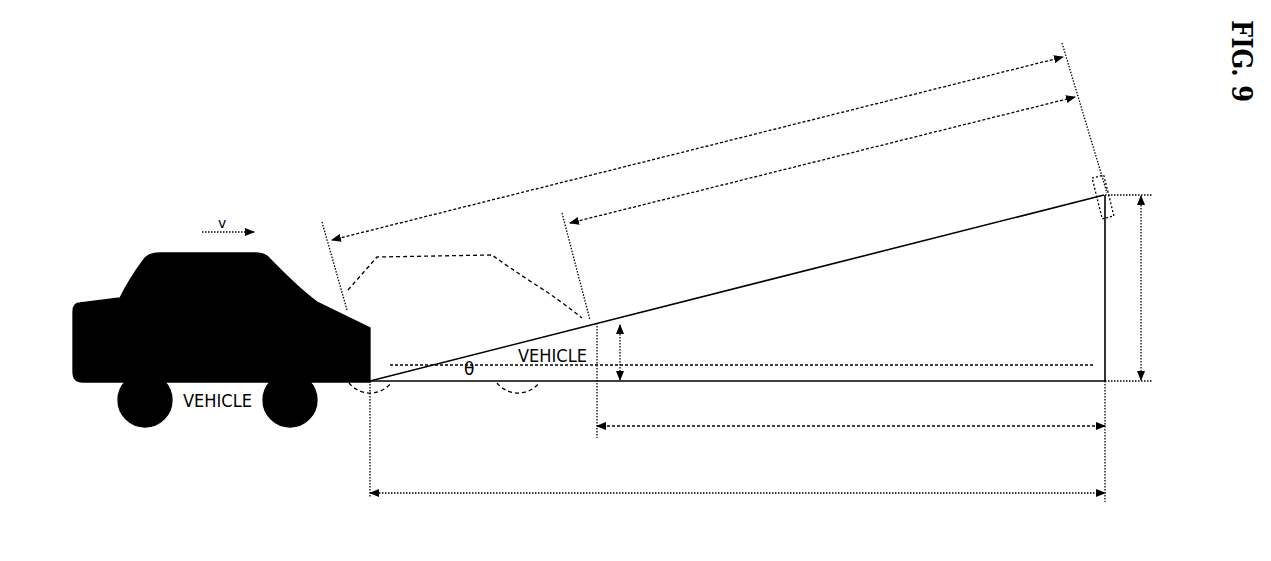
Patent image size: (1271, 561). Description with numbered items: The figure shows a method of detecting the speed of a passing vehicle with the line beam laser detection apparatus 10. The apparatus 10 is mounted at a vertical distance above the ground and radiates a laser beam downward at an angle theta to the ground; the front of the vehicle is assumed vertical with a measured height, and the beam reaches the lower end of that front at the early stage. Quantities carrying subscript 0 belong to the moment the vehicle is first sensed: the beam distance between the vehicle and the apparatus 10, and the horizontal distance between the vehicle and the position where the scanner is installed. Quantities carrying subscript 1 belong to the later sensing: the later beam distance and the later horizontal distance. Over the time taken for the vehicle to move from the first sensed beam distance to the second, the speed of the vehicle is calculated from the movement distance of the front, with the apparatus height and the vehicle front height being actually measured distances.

The line beam laser detection apparatus 10 is at (1108, 177).
The distances at first image instant (z0, x0, y0) 0 is at (752, 288).
The distances at second image instant (z1, x1, y1) 1 is at (837, 276).